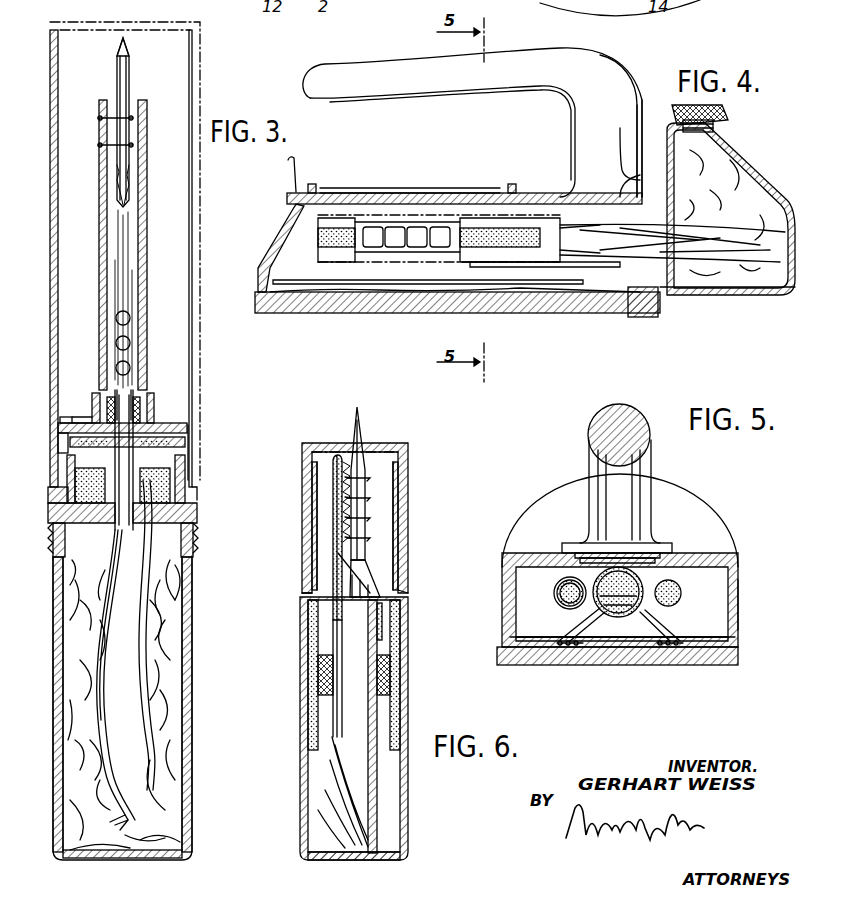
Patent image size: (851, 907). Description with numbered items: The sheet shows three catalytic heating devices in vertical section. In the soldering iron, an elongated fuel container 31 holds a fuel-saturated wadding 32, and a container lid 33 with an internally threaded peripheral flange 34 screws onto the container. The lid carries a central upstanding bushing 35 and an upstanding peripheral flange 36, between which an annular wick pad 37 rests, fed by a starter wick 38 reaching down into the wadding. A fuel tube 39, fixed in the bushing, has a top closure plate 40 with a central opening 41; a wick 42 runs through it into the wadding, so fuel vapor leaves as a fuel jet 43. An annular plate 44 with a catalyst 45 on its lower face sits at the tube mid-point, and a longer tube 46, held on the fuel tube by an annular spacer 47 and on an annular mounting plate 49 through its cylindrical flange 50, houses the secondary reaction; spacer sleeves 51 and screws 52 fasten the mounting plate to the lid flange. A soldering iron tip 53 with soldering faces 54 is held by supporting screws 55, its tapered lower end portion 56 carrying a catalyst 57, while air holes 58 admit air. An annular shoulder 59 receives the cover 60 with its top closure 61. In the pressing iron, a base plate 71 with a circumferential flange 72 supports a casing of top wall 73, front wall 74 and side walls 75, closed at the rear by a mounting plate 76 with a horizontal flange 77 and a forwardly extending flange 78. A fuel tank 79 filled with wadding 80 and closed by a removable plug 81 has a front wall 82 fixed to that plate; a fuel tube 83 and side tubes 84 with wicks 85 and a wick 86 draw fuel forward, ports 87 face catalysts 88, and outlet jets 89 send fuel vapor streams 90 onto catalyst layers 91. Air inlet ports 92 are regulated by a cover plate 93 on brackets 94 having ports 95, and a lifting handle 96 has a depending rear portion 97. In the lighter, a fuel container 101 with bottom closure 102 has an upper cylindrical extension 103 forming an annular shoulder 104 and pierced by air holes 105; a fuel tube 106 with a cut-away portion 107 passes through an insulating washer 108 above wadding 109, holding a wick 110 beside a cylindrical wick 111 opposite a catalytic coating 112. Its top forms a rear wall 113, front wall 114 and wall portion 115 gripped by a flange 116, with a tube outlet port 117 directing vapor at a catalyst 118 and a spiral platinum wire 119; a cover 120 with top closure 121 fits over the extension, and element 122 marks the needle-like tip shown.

In FIG. 3, the fuel container 31 is at (192, 678).
In FIG. 3, the fuel-saturated wadding 32 is at (165, 715).
In FIG. 3, the container lid 33 is at (180, 515).
In FIG. 3, the internally threaded peripheral flange 34 is at (198, 545).
In FIG. 3, the central upstanding bushing 35 is at (75, 482).
In FIG. 3, the upstanding peripheral flange 36 is at (186, 475).
In FIG. 3, the annular wick pad 37 is at (80, 492).
In FIG. 3, the starter wick 38 is at (160, 604).
In FIG. 3, the fuel tube 39 is at (90, 420).
In FIG. 3, the top closure plate 40 is at (110, 398).
In FIG. 3, the central opening 41 is at (118, 392).
In FIG. 3, the wick 42 is at (112, 600).
In FIG. 3, the fuel jet 43 is at (117, 288).
In FIG. 3, the annular plate 44 is at (188, 431).
In FIG. 3, the catalyst 45 is at (186, 446).
In FIG. 3, the tube 46 is at (145, 270).
In FIG. 3, the annular spacer 47 is at (140, 402).
In FIG. 3, the annular mounting plate 49 is at (190, 425).
In FIG. 3, the cylindrical flange 50 is at (154, 408).
In FIG. 3, the spacer sleeves 51 is at (58, 443).
In FIG. 3, the screws 52 is at (60, 420).
In FIG. 3, the soldering iron tip 53 is at (130, 80).
In FIG. 3, the soldering faces 54 is at (130, 52).
In FIG. 3, the supporting screws 55 is at (110, 115).
In FIG. 3, the lower end portion 56 is at (124, 172).
In FIG. 3, the catalyst 57 is at (130, 198).
In FIG. 3, the air holes 58 is at (147, 318).
In FIG. 3, the annular shoulder 59 is at (198, 492).
In FIG. 3, the cover 60 is at (50, 310).
In FIG. 3, the top closure 61 is at (84, 28).
In FIG. 4, the base plate 71 is at (305, 313).
In FIG. 5, the base plate 71 is at (622, 665).
In FIG. 4, the circumferential flange 72 is at (280, 280).
In FIG. 5, the circumferential flange 72 is at (740, 634).
In FIG. 5, the top wall 73 is at (715, 560).
In FIG. 4, the front wall 74 is at (278, 232).
In FIG. 5, the side walls 75 is at (740, 590).
In FIG. 4, the mounting plate 76 is at (672, 300).
In FIG. 4, the horizontal flange 77 is at (636, 316).
In FIG. 4, the forwardly extending flange 78 is at (645, 190).
In FIG. 4, the fuel tank 79 is at (740, 152).
In FIG. 4, the wadding 80 is at (735, 295).
In FIG. 4, the removable plug 81 is at (722, 112).
In FIG. 4, the front wall 82 is at (626, 152).
In FIG. 5, the front wall 82 is at (680, 502).
In FIG. 4, the fuel tube 83 is at (590, 268).
In FIG. 5, the fuel tube 83 is at (618, 560).
In FIG. 4, the horizontal tubes 84 is at (412, 192).
In FIG. 5, the horizontal tubes 84 is at (558, 598).
In FIG. 4, the wicks 85 is at (396, 250).
In FIG. 5, the wicks 85 is at (560, 586).
In FIG. 4, the wick 86 is at (735, 230).
In FIG. 5, the wick 86 is at (622, 610).
In FIG. 4, the ports 87 is at (418, 252).
In FIG. 5, the ports 87 is at (585, 592).
In FIG. 5, the catalysts 88 is at (635, 575).
In FIG. 4, the outlet jets 89 is at (562, 255).
In FIG. 5, the fuel vapor streams 90 is at (580, 632).
In FIG. 4, the catalyst layers 91 is at (450, 292).
In FIG. 5, the catalyst layers 91 is at (576, 647).
In FIG. 4, the air inlet ports 92 is at (320, 210).
In FIG. 5, the air inlet ports 92 is at (665, 585).
In FIG. 4, the cover plate 93 is at (298, 192).
In FIG. 4, the brackets 94 is at (315, 185).
In FIG. 5, the brackets 94 is at (572, 545).
In FIG. 4, the ports 95 is at (335, 193).
In FIG. 5, the ports 95 is at (585, 553).
In FIG. 4, the lifting handle 96 is at (363, 72).
In FIG. 5, the lifting handle 96 is at (622, 408).
In FIG. 4, the depending rear portion 97 is at (625, 100).
In FIG. 5, the depending rear portion 97 is at (652, 470).
In FIG. 6, the fuel container 101 is at (410, 708).
In FIG. 6, the bottom closure 102 is at (372, 860).
In FIG. 6, the upper cylindrical extension 103 is at (400, 500).
In FIG. 6, the annular shoulder 104 is at (405, 598).
In FIG. 6, the air holes 105 is at (400, 546).
In FIG. 6, the fuel tube 106 is at (333, 708).
In FIG. 6, the cut-away portion 107 is at (350, 780).
In FIG. 6, the insulating washer 108 is at (318, 685).
In FIG. 6, the fuel-saturated wadding 109 is at (385, 800).
In FIG. 6, the wick 110 is at (366, 588).
In FIG. 6, the cylindrical wick 111 is at (308, 640).
In FIG. 6, the catalytic coating 112 is at (388, 628).
In FIG. 6, the rear wall 113 is at (333, 540).
In FIG. 6, the front wall 114 is at (372, 580).
In FIG. 6, the wall portion 115 is at (333, 500).
In FIG. 6, the flange 116 is at (344, 460).
In FIG. 6, the tube outlet port 117 is at (356, 575).
In FIG. 6, the catalyst 118 is at (365, 475).
In FIG. 6, the platinum wire 119 is at (372, 498).
In FIG. 6, the cover 120 is at (312, 534).
In FIG. 6, the top closure 121 is at (322, 443).
In FIG. 6, the needle 122 is at (362, 430).